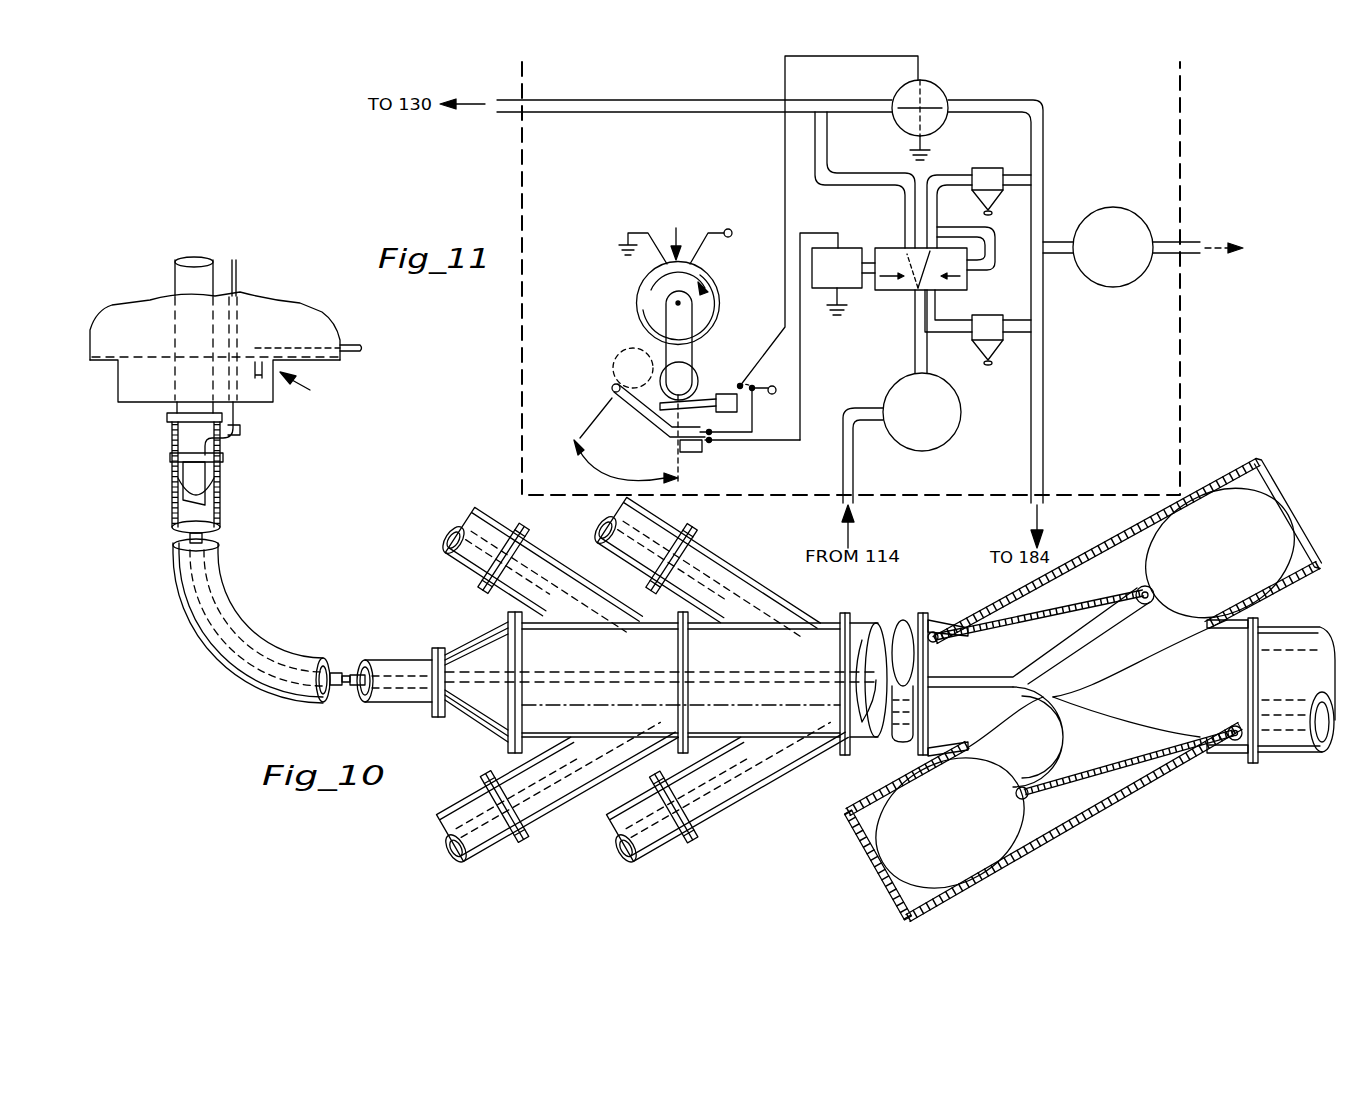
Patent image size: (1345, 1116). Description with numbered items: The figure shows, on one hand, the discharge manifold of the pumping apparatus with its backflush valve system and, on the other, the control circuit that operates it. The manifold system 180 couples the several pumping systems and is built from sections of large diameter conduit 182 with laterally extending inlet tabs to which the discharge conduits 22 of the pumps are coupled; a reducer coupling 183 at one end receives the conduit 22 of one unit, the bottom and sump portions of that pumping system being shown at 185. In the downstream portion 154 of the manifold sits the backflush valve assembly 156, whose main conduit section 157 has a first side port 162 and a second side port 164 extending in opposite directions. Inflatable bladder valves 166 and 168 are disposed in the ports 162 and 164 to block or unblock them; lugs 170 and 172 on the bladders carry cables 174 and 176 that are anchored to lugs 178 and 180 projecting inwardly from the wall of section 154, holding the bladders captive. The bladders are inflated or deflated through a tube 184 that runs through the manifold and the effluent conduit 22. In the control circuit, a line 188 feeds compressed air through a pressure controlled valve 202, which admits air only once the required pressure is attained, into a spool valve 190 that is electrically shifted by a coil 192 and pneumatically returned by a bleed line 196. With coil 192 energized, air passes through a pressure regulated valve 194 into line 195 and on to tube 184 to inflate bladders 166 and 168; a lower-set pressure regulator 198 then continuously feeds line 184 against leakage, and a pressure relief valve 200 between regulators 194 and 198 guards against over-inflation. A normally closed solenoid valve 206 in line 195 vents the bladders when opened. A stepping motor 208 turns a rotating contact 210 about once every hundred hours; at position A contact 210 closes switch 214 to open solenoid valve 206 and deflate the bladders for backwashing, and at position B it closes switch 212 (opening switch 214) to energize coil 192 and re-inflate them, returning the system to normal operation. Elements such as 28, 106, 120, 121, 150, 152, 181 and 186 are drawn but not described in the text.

In FIG. 10, the discharge conduit 22 is at (402, 656).
In FIG. 11, the conduit 28 is at (598, 102).
In FIG. 10, the tube 106 is at (108, 360).
In FIG. 10, the housing 120 is at (278, 392).
In FIG. 10, the pin 121 is at (345, 340).
In FIG. 10, the valve assembly 150 is at (148, 410).
In FIG. 10, the cap 152 is at (158, 338).
In FIG. 10, the downstream portion 154 is at (215, 696).
In FIG. 10, the backflush valve assembly 156 is at (970, 610).
In FIG. 10, the main conduit section 157 is at (1240, 760).
In FIG. 10, the first side port 162 is at (1102, 544).
In FIG. 10, the second side port 164 is at (1080, 822).
In FIG. 10, the inflatable bladder valve 166 is at (1237, 562).
In FIG. 10, the inflatable bladder valve 168 is at (967, 836).
In FIG. 10, the lug 170 is at (1152, 606).
In FIG. 10, the lug 172 is at (1028, 786).
In FIG. 10, the cable 174 is at (1090, 600).
In FIG. 10, the cable 176 is at (1112, 764).
In FIG. 10, the lug 178 is at (938, 640).
In FIG. 10, the manifold system 180 is at (488, 742).
In FIG. 10, the main tube 181 is at (620, 664).
In FIG. 10, the large diameter conduit 182 is at (575, 556).
In FIG. 10, the reducer coupling 183 is at (480, 640).
In FIG. 10, the tube 184 is at (240, 425).
In FIG. 10, the bottom and sump portions 185 is at (295, 379).
In FIG. 10, the branch tube 186 is at (574, 782).
In FIG. 11, the line 188 is at (906, 362).
In FIG. 11, the spool valve 190 is at (903, 292).
In FIG. 11, the coil 192 is at (853, 240).
In FIG. 11, the pressure regulated valve 194 is at (982, 166).
In FIG. 11, the line 195 is at (1043, 165).
In FIG. 11, the bleed line 196 is at (1000, 242).
In FIG. 11, the pressure regulator 198 is at (1010, 314).
In FIG. 11, the pressure relief valve 200 is at (1128, 208).
In FIG. 11, the pressure controlled valve 202 is at (962, 425).
In FIG. 11, the solenoid valve 206 is at (892, 92).
In FIG. 11, the stepping motor 208 is at (636, 290).
In FIG. 11, the rotating contact 210 is at (712, 318).
In FIG. 11, the switch 212 is at (640, 415).
In FIG. 11, the switch 214 is at (706, 395).